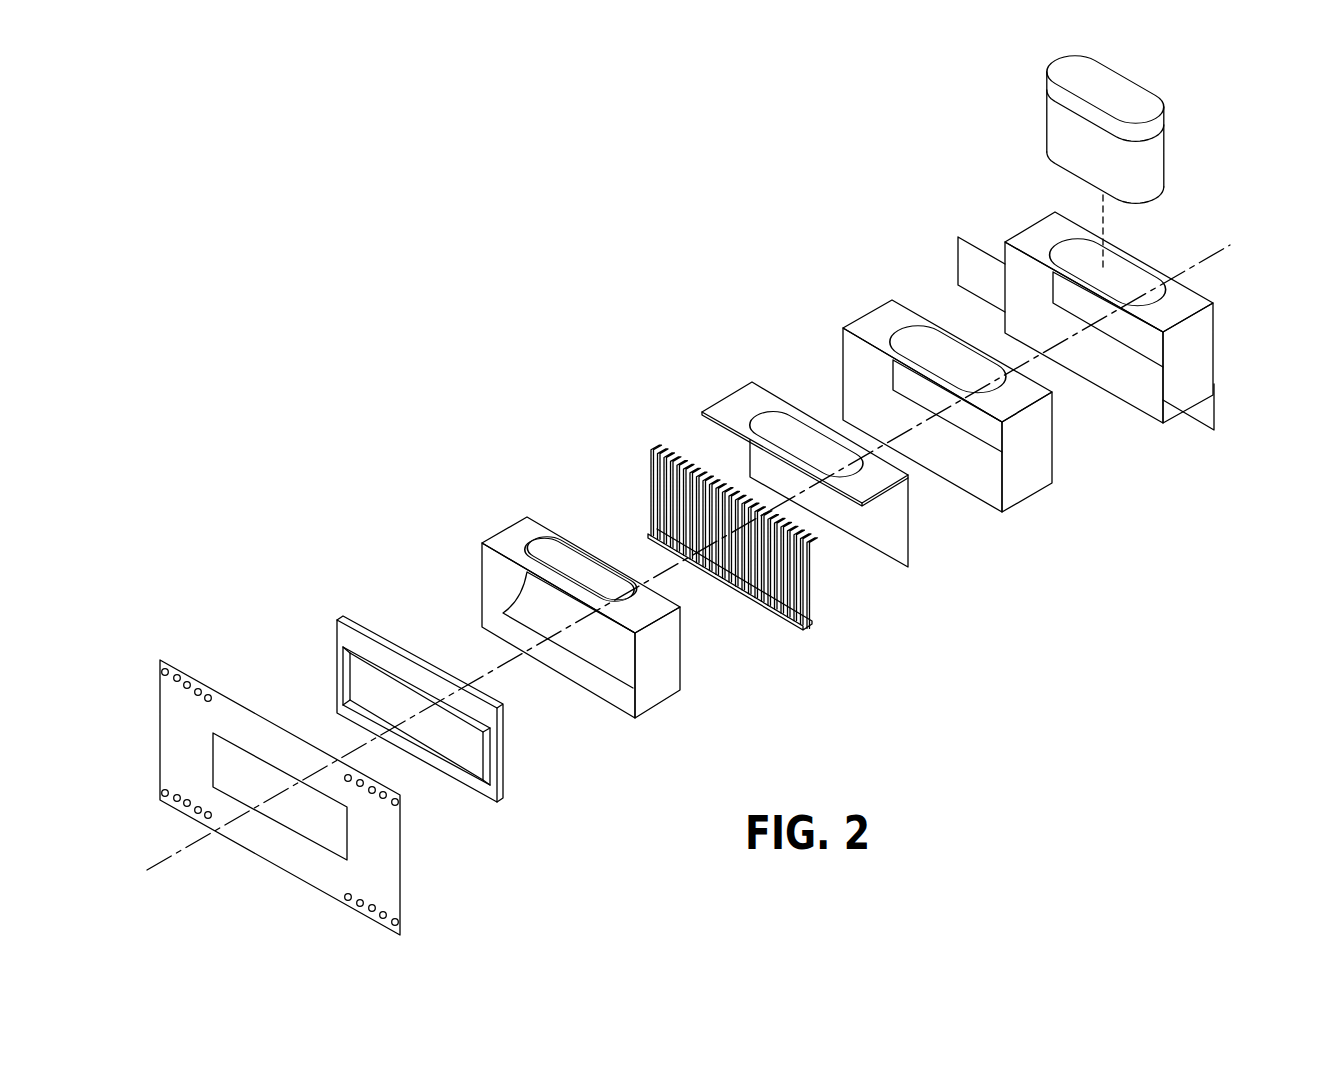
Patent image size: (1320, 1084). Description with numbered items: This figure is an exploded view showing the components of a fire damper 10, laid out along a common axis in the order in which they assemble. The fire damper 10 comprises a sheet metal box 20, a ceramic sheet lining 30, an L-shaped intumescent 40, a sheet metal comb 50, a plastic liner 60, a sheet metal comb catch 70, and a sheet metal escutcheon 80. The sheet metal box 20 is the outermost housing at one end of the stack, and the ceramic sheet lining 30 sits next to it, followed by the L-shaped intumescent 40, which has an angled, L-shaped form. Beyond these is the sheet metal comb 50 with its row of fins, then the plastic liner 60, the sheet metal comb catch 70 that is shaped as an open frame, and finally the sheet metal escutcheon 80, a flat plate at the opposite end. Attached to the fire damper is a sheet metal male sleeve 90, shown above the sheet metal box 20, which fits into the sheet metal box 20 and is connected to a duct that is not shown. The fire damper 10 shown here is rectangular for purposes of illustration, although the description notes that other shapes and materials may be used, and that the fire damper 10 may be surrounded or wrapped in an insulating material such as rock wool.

The fire damper 10 is at (383, 284).
The sheet metal box 20 is at (1180, 297).
The ceramic sheet lining 30 is at (1032, 460).
The L-shaped intumescent 40 is at (885, 532).
The sheet metal comb 50 is at (812, 572).
The plastic liner 60 is at (655, 663).
The sheet metal comb catch 70 is at (502, 747).
The sheet metal escutcheon 80 is at (383, 850).
The sheet metal male sleeve 90 is at (1155, 168).